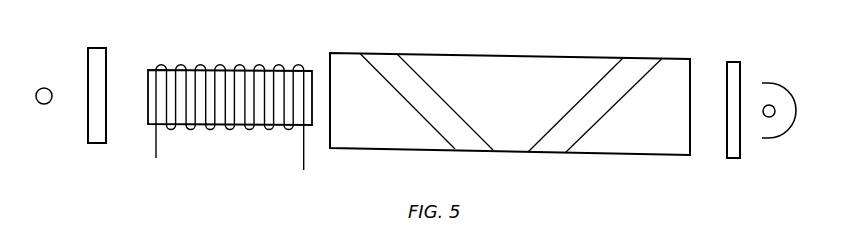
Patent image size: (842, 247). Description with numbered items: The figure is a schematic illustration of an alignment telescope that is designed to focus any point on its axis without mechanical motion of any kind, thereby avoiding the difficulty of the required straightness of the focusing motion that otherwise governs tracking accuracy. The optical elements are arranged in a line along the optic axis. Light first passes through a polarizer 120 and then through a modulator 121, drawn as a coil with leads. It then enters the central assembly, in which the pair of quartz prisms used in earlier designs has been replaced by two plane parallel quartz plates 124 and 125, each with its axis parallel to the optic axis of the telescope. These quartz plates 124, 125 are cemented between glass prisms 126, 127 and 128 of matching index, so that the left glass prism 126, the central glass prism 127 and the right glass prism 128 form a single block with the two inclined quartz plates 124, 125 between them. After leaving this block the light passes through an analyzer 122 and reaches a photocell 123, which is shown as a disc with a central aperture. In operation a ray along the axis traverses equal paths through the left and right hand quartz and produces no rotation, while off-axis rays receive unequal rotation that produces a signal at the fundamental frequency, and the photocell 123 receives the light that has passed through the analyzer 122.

The polarizer 120 is at (99, 47).
The modulator 121 is at (211, 68).
The analyzer 122 is at (728, 62).
The photocell 123 is at (767, 83).
The plane parallel quartz plate 124 is at (362, 53).
The plane parallel quartz plate 125 is at (637, 58).
The glass prism 126 is at (367, 114).
The glass prism 127 is at (516, 102).
The glass prism 128 is at (657, 124).